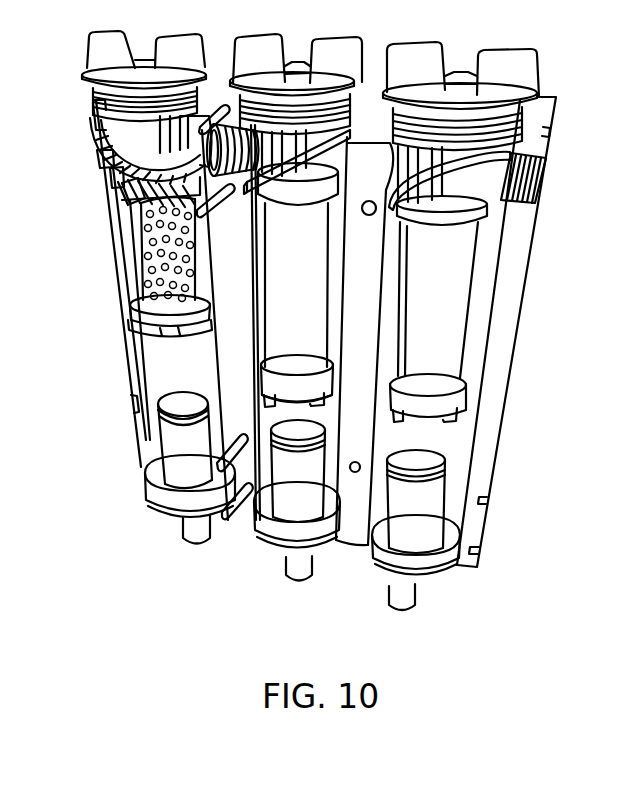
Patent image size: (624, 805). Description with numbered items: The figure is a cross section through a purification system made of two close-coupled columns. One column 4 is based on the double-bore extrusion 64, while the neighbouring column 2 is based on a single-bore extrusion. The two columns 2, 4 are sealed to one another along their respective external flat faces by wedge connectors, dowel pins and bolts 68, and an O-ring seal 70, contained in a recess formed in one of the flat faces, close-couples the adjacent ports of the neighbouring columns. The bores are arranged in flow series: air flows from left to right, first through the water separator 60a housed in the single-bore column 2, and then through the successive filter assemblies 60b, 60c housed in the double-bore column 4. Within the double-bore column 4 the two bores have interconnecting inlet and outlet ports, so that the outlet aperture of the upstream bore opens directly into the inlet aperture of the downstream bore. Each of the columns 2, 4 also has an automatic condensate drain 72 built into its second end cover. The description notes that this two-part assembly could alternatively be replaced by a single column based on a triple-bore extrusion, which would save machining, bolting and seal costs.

The single-bore column 2 is at (240, 555).
The double-bore column 4 is at (457, 608).
The water separator 60a is at (153, 243).
The filter assembly 60b is at (322, 301).
The filter assembly 60c is at (457, 325).
The double-bore extrusion 64 is at (135, 365).
The bolts 68 is at (100, 158).
The O-ring seal 70 is at (216, 118).
The automatic condensate drain 72 is at (427, 527).